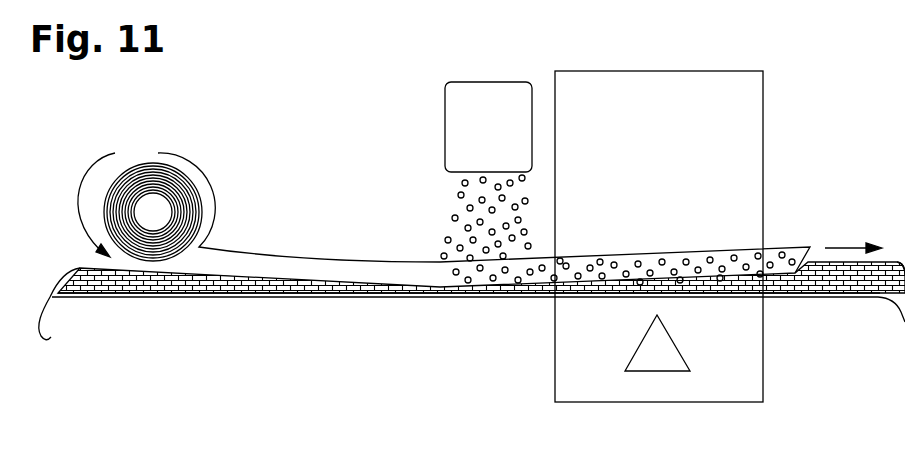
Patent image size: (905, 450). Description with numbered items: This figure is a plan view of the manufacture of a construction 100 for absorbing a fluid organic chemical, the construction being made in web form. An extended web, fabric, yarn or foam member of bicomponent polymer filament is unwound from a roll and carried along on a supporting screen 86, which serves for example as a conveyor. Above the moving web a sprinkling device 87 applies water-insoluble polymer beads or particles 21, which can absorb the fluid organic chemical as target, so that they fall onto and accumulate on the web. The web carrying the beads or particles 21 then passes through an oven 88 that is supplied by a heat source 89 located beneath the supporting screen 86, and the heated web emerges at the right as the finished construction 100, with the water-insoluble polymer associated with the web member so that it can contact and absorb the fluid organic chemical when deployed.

The water-insoluble polymer bead or particle 21 is at (637, 262).
The supporting screen 86 is at (395, 298).
The sprinkling device 87 is at (506, 133).
The oven 88 is at (763, 140).
The heat source 89 is at (672, 338).
The construction for absorbing a fluid organic chemical 100 is at (787, 228).